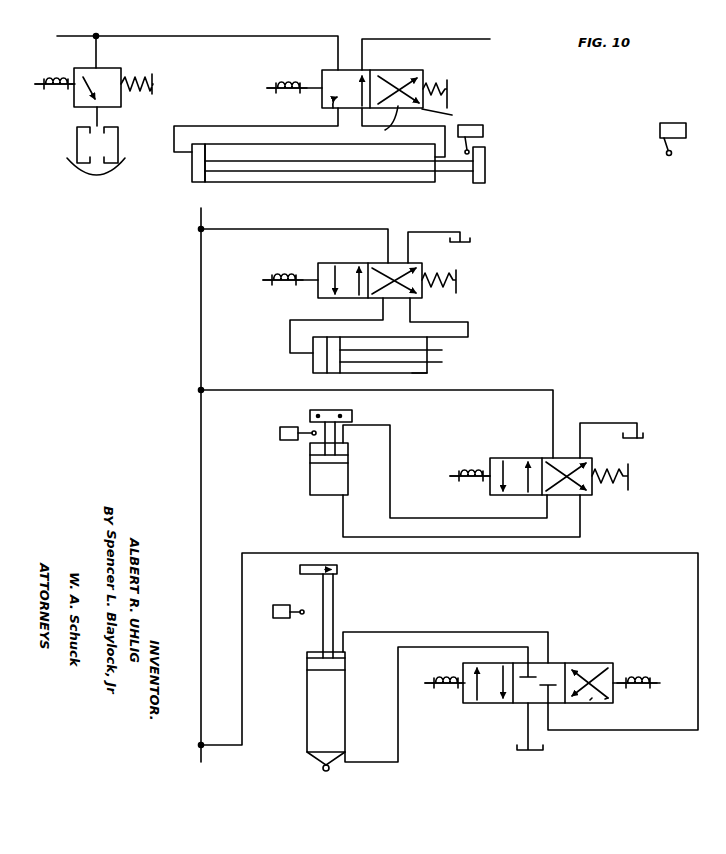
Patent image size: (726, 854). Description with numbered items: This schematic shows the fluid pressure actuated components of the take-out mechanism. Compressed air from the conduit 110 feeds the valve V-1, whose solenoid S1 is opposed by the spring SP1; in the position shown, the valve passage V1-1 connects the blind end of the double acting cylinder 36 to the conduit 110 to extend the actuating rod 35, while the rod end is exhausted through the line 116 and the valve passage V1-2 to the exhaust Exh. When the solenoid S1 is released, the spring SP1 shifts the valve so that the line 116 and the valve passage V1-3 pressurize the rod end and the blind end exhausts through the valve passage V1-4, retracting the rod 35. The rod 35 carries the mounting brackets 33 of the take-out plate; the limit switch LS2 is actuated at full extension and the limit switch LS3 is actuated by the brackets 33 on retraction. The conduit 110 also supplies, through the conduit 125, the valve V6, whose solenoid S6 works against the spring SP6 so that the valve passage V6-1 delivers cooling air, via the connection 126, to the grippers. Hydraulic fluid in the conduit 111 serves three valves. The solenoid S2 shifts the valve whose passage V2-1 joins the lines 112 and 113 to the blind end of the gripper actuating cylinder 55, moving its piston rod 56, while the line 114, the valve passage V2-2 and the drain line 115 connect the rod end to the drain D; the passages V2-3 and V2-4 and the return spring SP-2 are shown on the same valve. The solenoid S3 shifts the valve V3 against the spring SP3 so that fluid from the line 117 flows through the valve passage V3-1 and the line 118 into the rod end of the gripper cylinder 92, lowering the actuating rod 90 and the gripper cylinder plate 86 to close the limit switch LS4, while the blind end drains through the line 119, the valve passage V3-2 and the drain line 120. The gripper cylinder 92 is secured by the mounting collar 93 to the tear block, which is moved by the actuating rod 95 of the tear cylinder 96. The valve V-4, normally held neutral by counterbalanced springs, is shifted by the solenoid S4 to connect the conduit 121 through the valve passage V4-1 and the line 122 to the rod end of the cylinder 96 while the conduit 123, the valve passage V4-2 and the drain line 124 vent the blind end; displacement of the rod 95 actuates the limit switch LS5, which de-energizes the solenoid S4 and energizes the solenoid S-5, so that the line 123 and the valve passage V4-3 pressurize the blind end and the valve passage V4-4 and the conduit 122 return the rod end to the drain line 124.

The conduit 125 is at (61, 36).
The conduit 110 is at (218, 36).
The valve V6 is at (70, 109).
The valve passage V6-1 is at (101, 76).
The solenoid S6 is at (58, 78).
The spring SP6 is at (136, 75).
The outlet 126 is at (99, 176).
The solenoid S1 is at (310, 80).
The valve V-1 is at (389, 65).
The valve passage V1-1 is at (316, 111).
The valve passage V1-2 is at (361, 91).
The exhaust Exh is at (444, 51).
The spring SP1 is at (438, 78).
The valve passage V1-3 is at (456, 116).
The valve passage V1-4 is at (382, 126).
The line 116 is at (418, 128).
The double acting cylinder 36 is at (290, 183).
The actuating rod 35 is at (446, 172).
The mounting bracket 33 is at (487, 176).
The limit switch LS3 is at (483, 130).
The limit switch LS2 is at (660, 125).
The conduit 111 is at (201, 283).
The line 112 is at (224, 231).
The solenoid S2 is at (302, 273).
The valve passage V2-1 is at (338, 268).
The valve passage V2-2 is at (361, 299).
The valve passage V2-3 is at (418, 292).
The valve passage V2-4 is at (396, 265).
The spring SP2 SP-2 is at (448, 270).
The drain line 115 is at (461, 230).
The drain D is at (473, 243).
The line 113 is at (290, 343).
The line 114 is at (470, 322).
The piston rod 56 is at (443, 354).
The fluid pressure actuated cylinder 55 is at (412, 380).
The line 117 is at (515, 393).
The gripper cylinder plate 86 is at (352, 413).
The actuating rod 90 is at (313, 452).
The gripper cylinder 92 is at (312, 492).
The limit switch LS4 is at (280, 437).
The line 118 is at (428, 516).
The line 119 is at (582, 535).
The drain line 120 is at (600, 423).
The solenoid S3 is at (464, 468).
The valve V3 is at (602, 493).
The valve passage V3-1 is at (503, 465).
The valve passage V3-2 is at (506, 489).
The spring SP3 is at (605, 463).
The conduit 121 is at (546, 555).
The mounting collar 93 is at (299, 570).
The actuating rod 95 is at (337, 600).
The limit switch LS5 is at (273, 614).
The tear cylinder 96 is at (318, 690).
The line 122 is at (457, 616).
The conduit 123 is at (400, 757).
The solenoid S-5 is at (446, 677).
The solenoid S4 is at (632, 673).
The valve V-4 is at (575, 655).
The valve passage V4-3 is at (488, 690).
The valve passage V4-4 is at (498, 667).
The valve passage V4-1 is at (605, 700).
The valve passage V4-2 is at (592, 700).
The drain line 124 is at (527, 741).